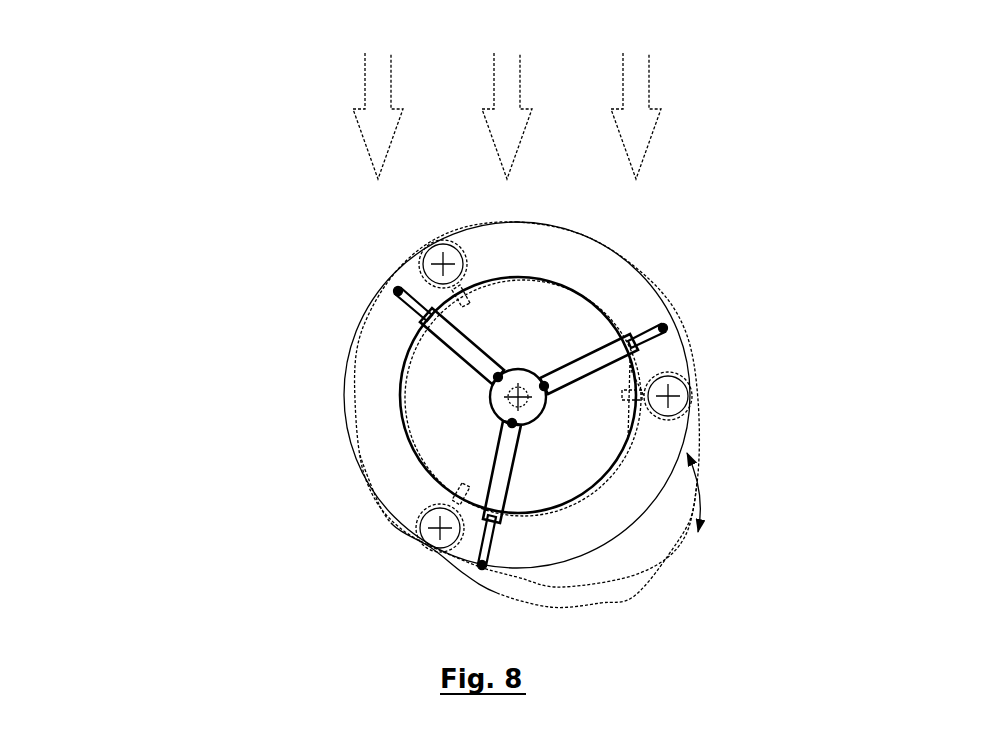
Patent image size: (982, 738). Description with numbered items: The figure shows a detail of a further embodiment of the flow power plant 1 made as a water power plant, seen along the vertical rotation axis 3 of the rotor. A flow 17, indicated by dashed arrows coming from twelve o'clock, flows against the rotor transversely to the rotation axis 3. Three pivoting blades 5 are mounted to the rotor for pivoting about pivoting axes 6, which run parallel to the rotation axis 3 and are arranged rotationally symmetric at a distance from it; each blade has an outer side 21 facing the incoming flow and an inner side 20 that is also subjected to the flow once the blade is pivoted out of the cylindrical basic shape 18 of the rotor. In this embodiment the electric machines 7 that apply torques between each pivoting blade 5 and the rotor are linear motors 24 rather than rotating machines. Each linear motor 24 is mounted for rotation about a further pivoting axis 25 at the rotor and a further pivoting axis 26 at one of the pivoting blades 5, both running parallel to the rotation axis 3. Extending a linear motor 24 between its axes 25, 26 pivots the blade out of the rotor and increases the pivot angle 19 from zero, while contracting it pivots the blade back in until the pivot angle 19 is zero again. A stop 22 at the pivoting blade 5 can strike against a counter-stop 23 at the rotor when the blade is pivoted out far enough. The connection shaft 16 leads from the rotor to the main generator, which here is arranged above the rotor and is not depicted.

The flow power plant 1 is at (172, 165).
The rotation axis 3 is at (492, 397).
The pivoting blade 5 is at (345, 380).
The pivoting axis 6 is at (443, 265).
The electric machine 7 is at (487, 463).
The connection shaft 16 is at (487, 408).
The flow 17 is at (368, 157).
The cylindrical basic shape 18 is at (393, 525).
The pivot angle 19 is at (698, 497).
The inner side 20 is at (640, 573).
The outer side 21 is at (655, 280).
The stop 22 is at (693, 410).
The counter-stop 23 is at (634, 358).
The linear motor 24 is at (645, 348).
The further pivoting axis 25 is at (498, 377).
The further pivoting axis 26 is at (398, 291).